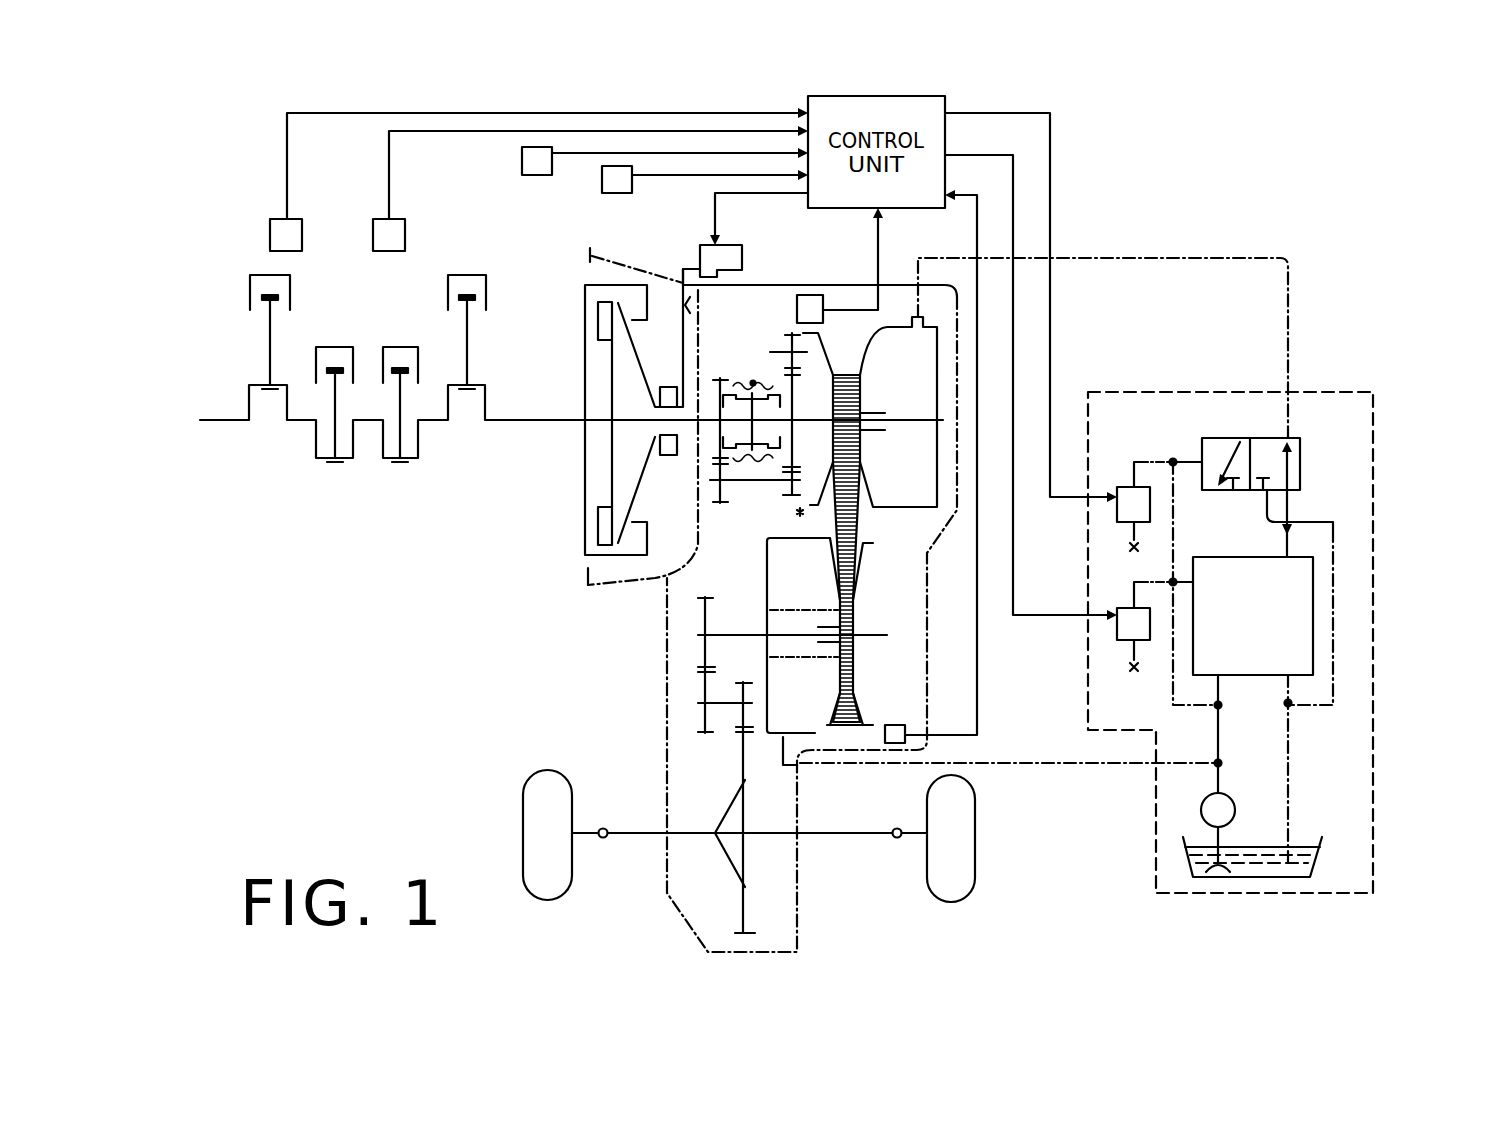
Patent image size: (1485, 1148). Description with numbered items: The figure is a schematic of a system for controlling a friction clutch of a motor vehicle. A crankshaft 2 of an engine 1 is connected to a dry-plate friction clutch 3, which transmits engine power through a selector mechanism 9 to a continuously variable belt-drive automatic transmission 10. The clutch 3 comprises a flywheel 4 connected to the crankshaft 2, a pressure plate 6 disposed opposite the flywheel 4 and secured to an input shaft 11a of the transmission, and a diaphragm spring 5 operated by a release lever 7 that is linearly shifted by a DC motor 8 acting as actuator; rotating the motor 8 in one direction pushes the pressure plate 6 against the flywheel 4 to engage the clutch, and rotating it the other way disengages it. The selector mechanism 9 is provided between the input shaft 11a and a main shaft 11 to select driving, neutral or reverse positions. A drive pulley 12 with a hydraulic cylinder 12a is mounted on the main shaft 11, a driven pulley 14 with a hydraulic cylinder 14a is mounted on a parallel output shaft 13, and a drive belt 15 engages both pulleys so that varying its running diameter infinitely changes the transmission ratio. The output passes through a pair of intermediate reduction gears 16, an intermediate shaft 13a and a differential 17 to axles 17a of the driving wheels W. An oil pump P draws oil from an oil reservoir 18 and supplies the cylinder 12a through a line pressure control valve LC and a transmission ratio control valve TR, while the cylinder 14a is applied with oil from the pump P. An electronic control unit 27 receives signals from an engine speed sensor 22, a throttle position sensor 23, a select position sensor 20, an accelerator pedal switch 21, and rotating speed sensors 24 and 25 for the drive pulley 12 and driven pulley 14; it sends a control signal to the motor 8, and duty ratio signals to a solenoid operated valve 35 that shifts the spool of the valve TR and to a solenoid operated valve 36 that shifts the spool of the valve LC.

The engine 1 is at (310, 486).
The crankshaft 2 is at (510, 423).
The dry-plate friction clutch 3 is at (590, 283).
The flywheel 4 is at (583, 497).
The diaphragm spring 5 is at (638, 483).
The pressure plate 6 is at (597, 530).
The release lever 7 is at (680, 353).
The DC motor 8 is at (700, 255).
The selector mechanism 9 is at (750, 370).
The continuously variable belt-drive automatic transmission 10 is at (853, 314).
The main shaft 11 is at (826, 424).
The input shaft 11a is at (728, 440).
The drive pulley 12 is at (828, 358).
The hydraulic cylinder 12a is at (910, 472).
The output shaft 13 is at (752, 608).
The intermediate shaft 13a is at (730, 712).
The driven pulley 14 is at (890, 605).
The hydraulic cylinder 14a is at (790, 577).
The drive belt 15 is at (830, 519).
The intermediate reduction gears 16 is at (688, 677).
The differential 17 is at (735, 818).
The axles 17a is at (655, 808).
The oil reservoir 18 is at (1320, 855).
The select position sensor 20 is at (537, 176).
The accelerator pedal switch 21 is at (628, 194).
The engine speed sensor 22 is at (405, 231).
The throttle position sensor 23 is at (302, 231).
The rotating speed sensor 24 is at (797, 310).
The rotating speed sensor 25 is at (897, 725).
The electronic control unit 27 is at (925, 208).
The solenoid operated valve 35 is at (1122, 486).
The solenoid operated valve 36 is at (1122, 607).
The driving wheels W is at (548, 883).
The transmission ratio control valve TR is at (1245, 418).
The line pressure control valve LC is at (1240, 557).
The oil pump P is at (1218, 832).